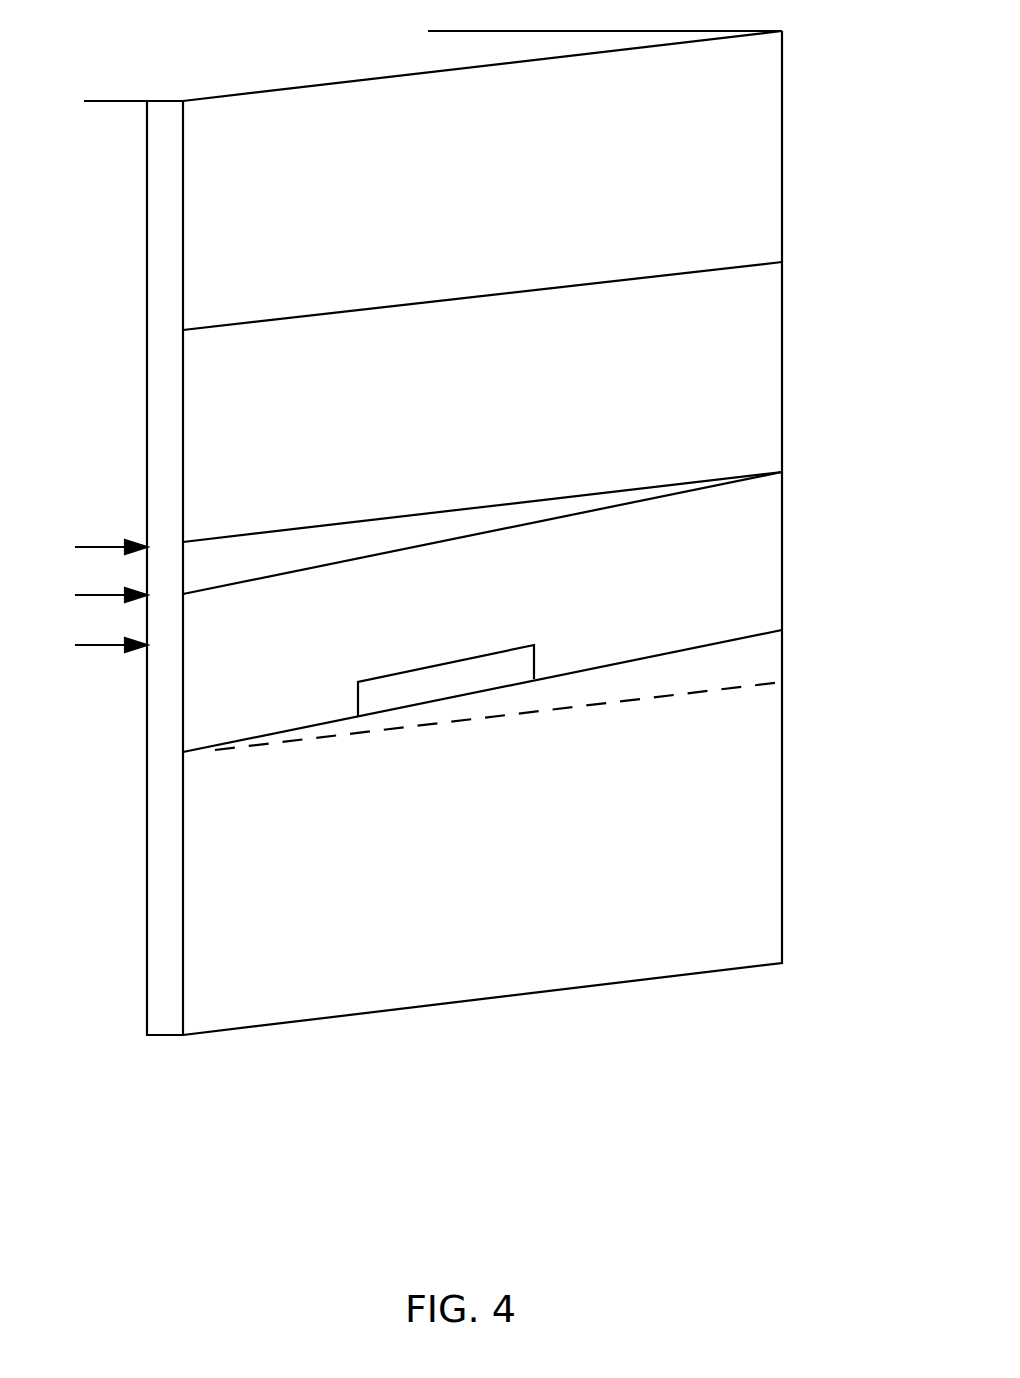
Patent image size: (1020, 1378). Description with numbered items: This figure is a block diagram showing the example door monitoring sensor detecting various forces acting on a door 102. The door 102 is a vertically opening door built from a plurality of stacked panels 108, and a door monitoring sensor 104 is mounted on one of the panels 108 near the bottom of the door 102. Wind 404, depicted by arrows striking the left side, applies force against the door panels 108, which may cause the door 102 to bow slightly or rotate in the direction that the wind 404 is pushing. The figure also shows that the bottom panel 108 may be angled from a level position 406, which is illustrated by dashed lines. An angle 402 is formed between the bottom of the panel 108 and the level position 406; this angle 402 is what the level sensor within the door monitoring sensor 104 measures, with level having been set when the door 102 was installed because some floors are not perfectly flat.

The door 102 is at (738, 322).
The panel 108 is at (767, 541).
The door monitoring sensor 104 is at (446, 681).
The angle 402 is at (472, 694).
The wind 404 is at (98, 648).
The level position 406 is at (745, 688).